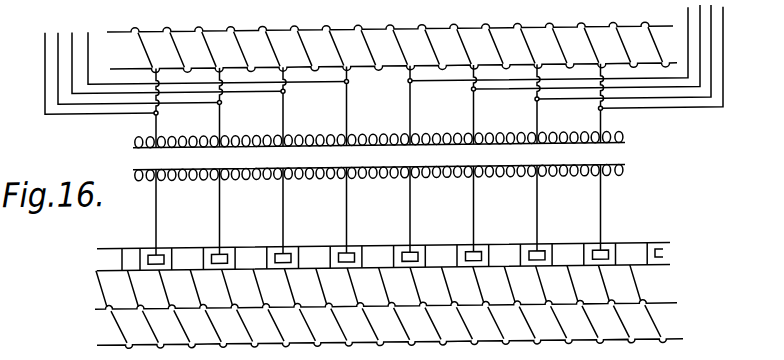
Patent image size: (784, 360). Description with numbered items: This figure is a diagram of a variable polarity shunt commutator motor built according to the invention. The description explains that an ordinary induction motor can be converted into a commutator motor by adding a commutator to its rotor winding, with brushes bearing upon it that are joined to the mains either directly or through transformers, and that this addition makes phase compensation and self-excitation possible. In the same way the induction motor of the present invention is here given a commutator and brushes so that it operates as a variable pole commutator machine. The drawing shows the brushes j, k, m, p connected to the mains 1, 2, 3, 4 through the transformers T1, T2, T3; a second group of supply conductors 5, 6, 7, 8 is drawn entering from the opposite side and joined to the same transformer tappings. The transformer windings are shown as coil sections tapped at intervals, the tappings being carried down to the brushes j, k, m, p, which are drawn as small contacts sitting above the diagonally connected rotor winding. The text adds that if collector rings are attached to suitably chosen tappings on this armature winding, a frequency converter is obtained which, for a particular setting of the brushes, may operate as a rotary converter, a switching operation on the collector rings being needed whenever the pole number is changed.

The main 1 is at (45, 57).
The main 2 is at (58, 57).
The main 3 is at (72, 57).
The main 4 is at (88, 57).
The supply conductor 5 is at (688, 26).
The supply conductor 6 is at (700, 15).
The supply conductor 7 is at (711, 15).
The supply conductor 8 is at (723, 29).
The transformer T1 is at (176, 158).
The transformer T2 is at (251, 157).
The transformer T3 is at (314, 156).
The brush j is at (161, 250).
The brush k is at (223, 251).
The brush m is at (288, 252).
The brush p is at (350, 252).